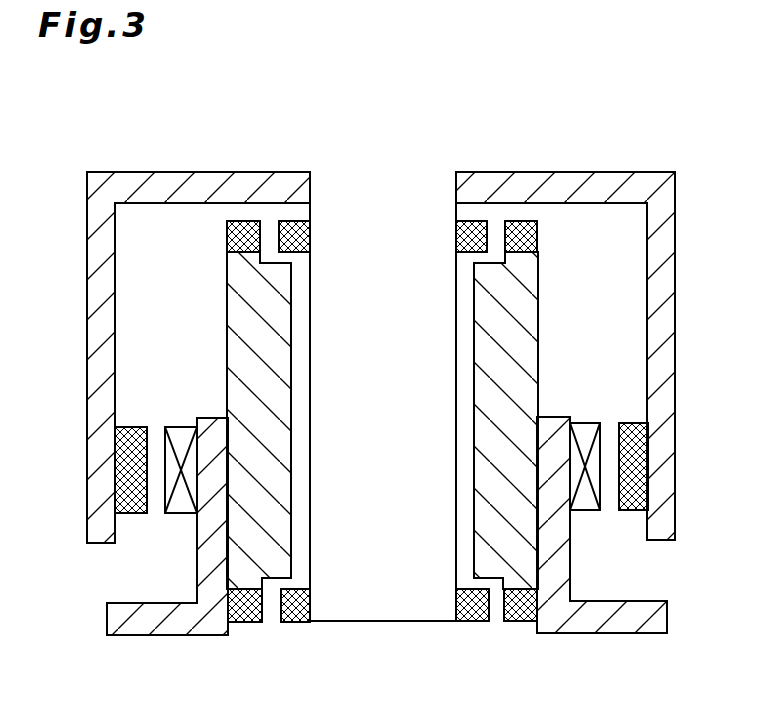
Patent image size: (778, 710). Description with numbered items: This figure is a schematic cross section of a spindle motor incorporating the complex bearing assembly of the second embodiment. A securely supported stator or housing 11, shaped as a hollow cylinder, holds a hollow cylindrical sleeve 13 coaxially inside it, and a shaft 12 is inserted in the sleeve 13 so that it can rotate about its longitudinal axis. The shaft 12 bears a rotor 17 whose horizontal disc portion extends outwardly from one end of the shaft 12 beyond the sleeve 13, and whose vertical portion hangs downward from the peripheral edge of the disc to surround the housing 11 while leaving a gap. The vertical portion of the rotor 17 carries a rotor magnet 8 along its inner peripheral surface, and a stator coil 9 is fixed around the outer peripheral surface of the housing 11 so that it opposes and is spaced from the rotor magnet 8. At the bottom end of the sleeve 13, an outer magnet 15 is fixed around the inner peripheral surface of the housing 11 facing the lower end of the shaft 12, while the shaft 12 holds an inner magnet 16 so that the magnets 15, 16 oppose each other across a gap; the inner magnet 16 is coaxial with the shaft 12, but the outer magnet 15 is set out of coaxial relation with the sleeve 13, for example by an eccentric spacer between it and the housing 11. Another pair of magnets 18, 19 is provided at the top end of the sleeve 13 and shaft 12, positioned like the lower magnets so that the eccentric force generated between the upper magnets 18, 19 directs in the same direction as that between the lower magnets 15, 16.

The rotor magnet 8 is at (640, 448).
The stator coil 9 is at (585, 508).
The housing 11 is at (587, 615).
The shaft 12 is at (400, 597).
The sleeve 13 is at (523, 315).
The outer magnet 15 is at (245, 620).
The inner magnet 16 is at (300, 620).
The rotor 17 is at (153, 176).
The upper magnet 18 is at (247, 220).
The upper magnet 19 is at (292, 220).